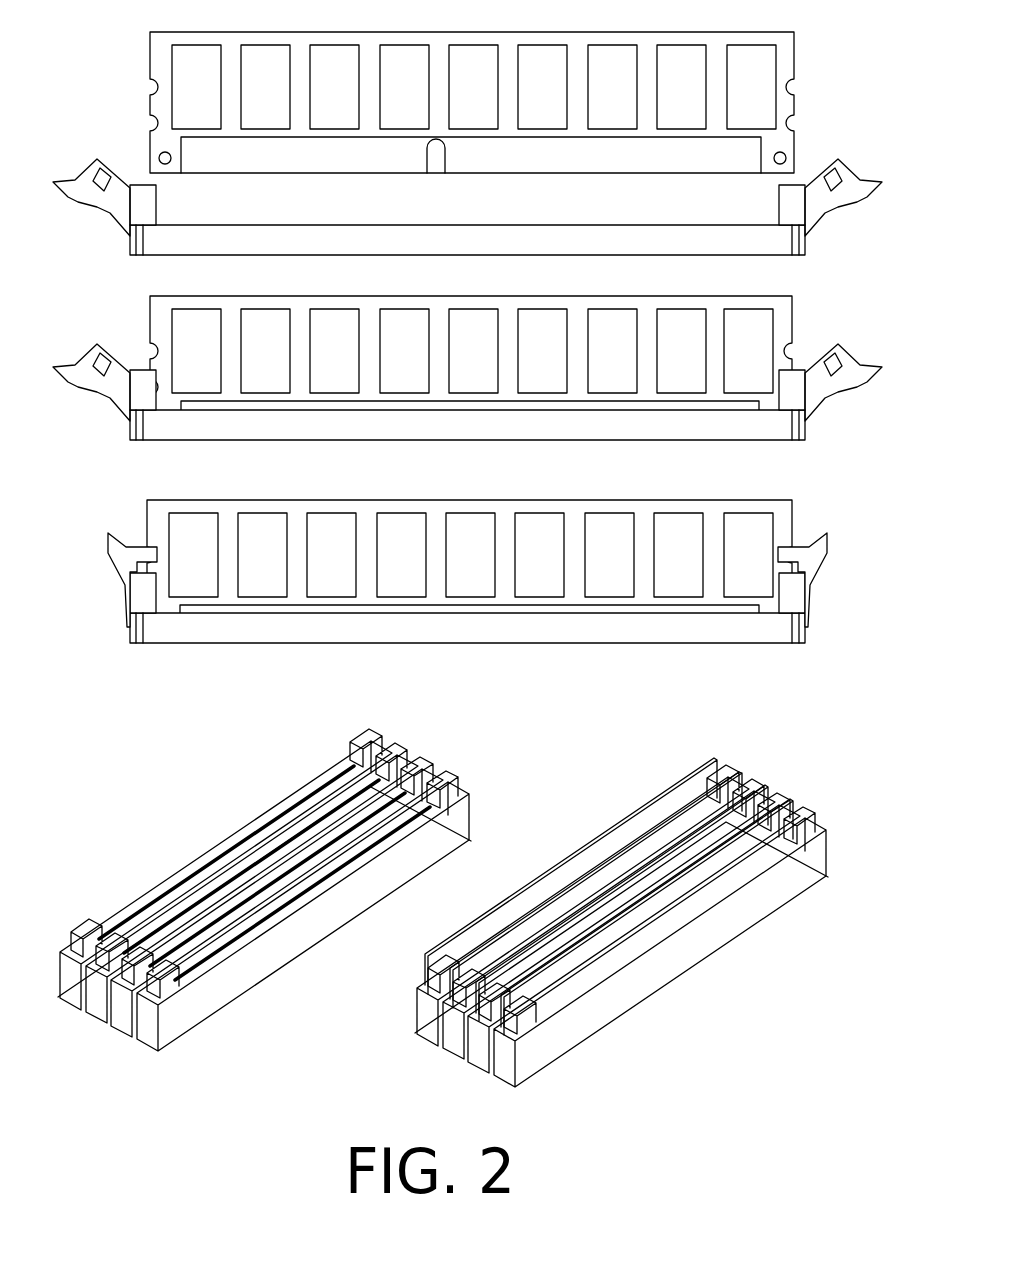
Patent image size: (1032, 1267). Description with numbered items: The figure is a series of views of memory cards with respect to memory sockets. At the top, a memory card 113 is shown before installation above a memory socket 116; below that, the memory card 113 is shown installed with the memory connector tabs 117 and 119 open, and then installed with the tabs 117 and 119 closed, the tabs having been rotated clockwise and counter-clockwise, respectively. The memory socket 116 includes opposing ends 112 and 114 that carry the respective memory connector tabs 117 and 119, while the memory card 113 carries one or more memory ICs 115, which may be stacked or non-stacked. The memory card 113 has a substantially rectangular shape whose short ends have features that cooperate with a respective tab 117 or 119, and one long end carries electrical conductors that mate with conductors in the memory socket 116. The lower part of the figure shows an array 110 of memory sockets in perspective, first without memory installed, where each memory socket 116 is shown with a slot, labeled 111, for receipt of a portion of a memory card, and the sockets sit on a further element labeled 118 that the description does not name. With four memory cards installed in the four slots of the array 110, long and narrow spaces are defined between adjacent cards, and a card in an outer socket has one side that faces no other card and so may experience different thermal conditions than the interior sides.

The array of memory sockets 110 is at (225, 771).
The memory socket slot 111 is at (333, 908).
The end 112 is at (128, 248).
The memory card 113 is at (173, 31).
The end 114 is at (807, 248).
The memory IC 115 is at (210, 95).
The memory socket 116 is at (482, 252).
The memory connector tab 117 is at (93, 213).
The printed circuit board base 118 is at (170, 903).
The memory connector tab 119 is at (842, 213).